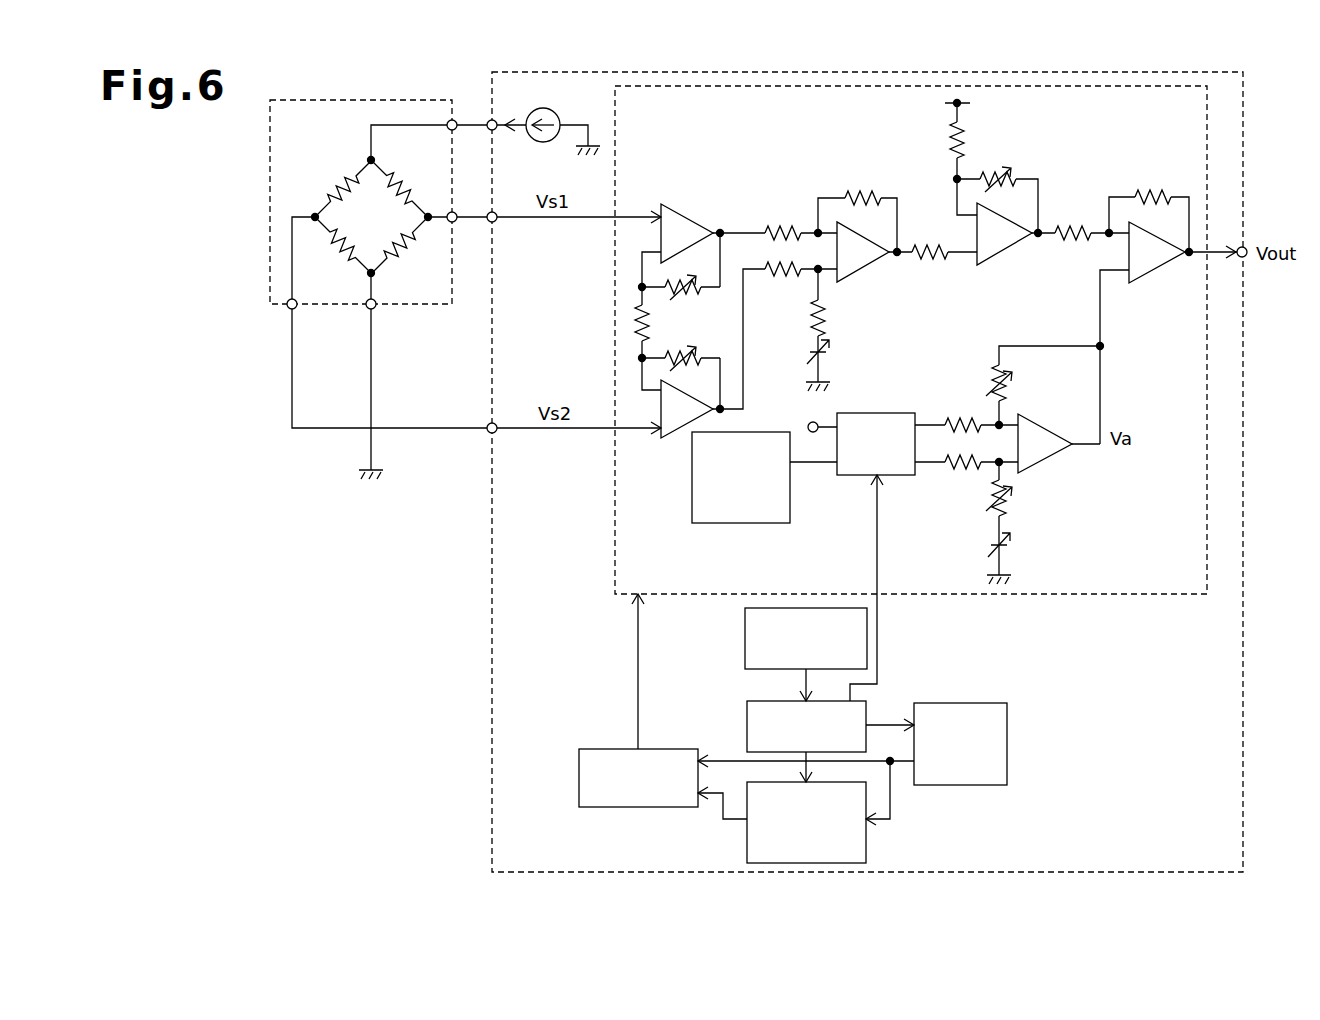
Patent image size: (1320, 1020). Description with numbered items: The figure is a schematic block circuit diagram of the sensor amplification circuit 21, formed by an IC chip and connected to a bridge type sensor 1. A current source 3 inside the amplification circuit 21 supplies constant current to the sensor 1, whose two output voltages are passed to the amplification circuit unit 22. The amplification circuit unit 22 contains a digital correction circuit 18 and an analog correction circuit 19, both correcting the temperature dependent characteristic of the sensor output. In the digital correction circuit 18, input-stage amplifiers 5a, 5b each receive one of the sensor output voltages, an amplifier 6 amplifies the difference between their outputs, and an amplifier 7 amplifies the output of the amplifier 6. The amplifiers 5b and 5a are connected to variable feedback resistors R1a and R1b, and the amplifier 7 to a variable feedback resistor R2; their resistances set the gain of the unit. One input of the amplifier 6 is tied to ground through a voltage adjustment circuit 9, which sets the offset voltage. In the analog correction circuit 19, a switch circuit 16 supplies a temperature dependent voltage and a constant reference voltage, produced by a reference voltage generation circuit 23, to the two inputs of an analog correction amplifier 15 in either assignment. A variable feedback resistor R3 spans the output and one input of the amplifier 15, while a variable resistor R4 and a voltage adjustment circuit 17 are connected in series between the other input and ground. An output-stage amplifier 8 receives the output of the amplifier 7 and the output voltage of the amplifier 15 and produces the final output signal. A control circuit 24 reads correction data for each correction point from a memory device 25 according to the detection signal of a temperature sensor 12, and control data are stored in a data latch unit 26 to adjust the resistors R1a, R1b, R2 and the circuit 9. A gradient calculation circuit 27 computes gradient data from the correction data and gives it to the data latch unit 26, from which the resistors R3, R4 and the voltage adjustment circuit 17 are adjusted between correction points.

The bridge type sensor 1 is at (452, 100).
The current source 3 is at (553, 111).
The input-stage amplifier 5a is at (685, 210).
The input-stage amplifier 5b is at (668, 441).
The amplifier 6 is at (866, 272).
The amplifier 7 is at (1000, 252).
The output-stage amplifier 8 is at (1150, 272).
The voltage adjustment circuit 9 is at (832, 352).
The temperature sensor 12 is at (745, 637).
The analog correction amplifier 15 is at (1036, 420).
The switch circuit 16 is at (880, 413).
The voltage adjustment circuit 17 is at (1010, 543).
The digital correction circuit 18 is at (1127, 150).
The analog correction circuit 19 is at (1075, 466).
The sensor amplification circuit 21 is at (1243, 72).
The amplification circuit unit 22 is at (1132, 594).
The reference voltage generation circuit 23 is at (740, 523).
The control circuit 24 is at (760, 701).
The memory device 25 is at (985, 703).
The data latch unit 26 is at (590, 749).
The gradient calculation circuit 27 is at (866, 845).
The feedback resistor R1a is at (686, 352).
The feedback resistor R1b is at (688, 300).
The feedback resistor R2 is at (996, 172).
The feedback resistor R3 is at (1010, 388).
The variable resistor R4 is at (1010, 506).